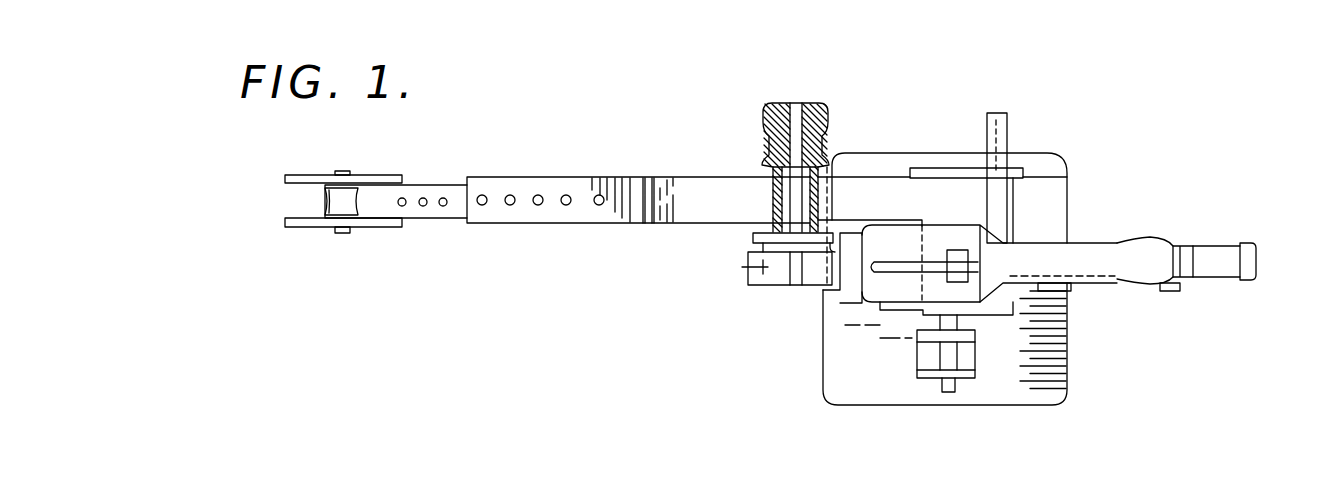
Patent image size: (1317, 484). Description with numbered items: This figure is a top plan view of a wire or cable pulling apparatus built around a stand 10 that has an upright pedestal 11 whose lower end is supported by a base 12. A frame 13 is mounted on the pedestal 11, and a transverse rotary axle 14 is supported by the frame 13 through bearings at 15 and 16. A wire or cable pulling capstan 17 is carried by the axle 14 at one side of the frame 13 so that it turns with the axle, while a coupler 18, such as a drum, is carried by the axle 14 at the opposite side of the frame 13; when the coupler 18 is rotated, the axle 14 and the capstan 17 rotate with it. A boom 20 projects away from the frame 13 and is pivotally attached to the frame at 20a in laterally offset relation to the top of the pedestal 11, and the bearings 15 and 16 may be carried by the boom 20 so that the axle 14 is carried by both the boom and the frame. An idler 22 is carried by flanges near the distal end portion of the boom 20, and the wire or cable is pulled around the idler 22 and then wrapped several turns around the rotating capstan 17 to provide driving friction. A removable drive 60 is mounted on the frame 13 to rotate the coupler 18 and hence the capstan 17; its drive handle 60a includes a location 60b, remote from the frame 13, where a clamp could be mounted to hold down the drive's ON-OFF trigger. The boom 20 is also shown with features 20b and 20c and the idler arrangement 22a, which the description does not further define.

The stand 10 is at (1090, 122).
The upright pedestal 11 is at (913, 382).
The base 12 is at (1067, 330).
The frame 13 is at (1018, 210).
The transverse rotary axle 14 is at (763, 122).
The bearing 15 is at (771, 186).
The bearing 16 is at (773, 207).
The wire or cable pulling capstan 17 is at (827, 127).
The coupler 18 is at (740, 270).
The boom 20 is at (567, 215).
The pivotal attachment 20a is at (947, 392).
The adjustment holes 20b is at (430, 210).
The wide arm section 20c is at (513, 177).
The idler 22 is at (330, 200).
The buckle plates 22a is at (286, 223).
The removable drive 60 is at (830, 290).
The drive handle 60a is at (1110, 262).
The clamp location 60b is at (1197, 263).